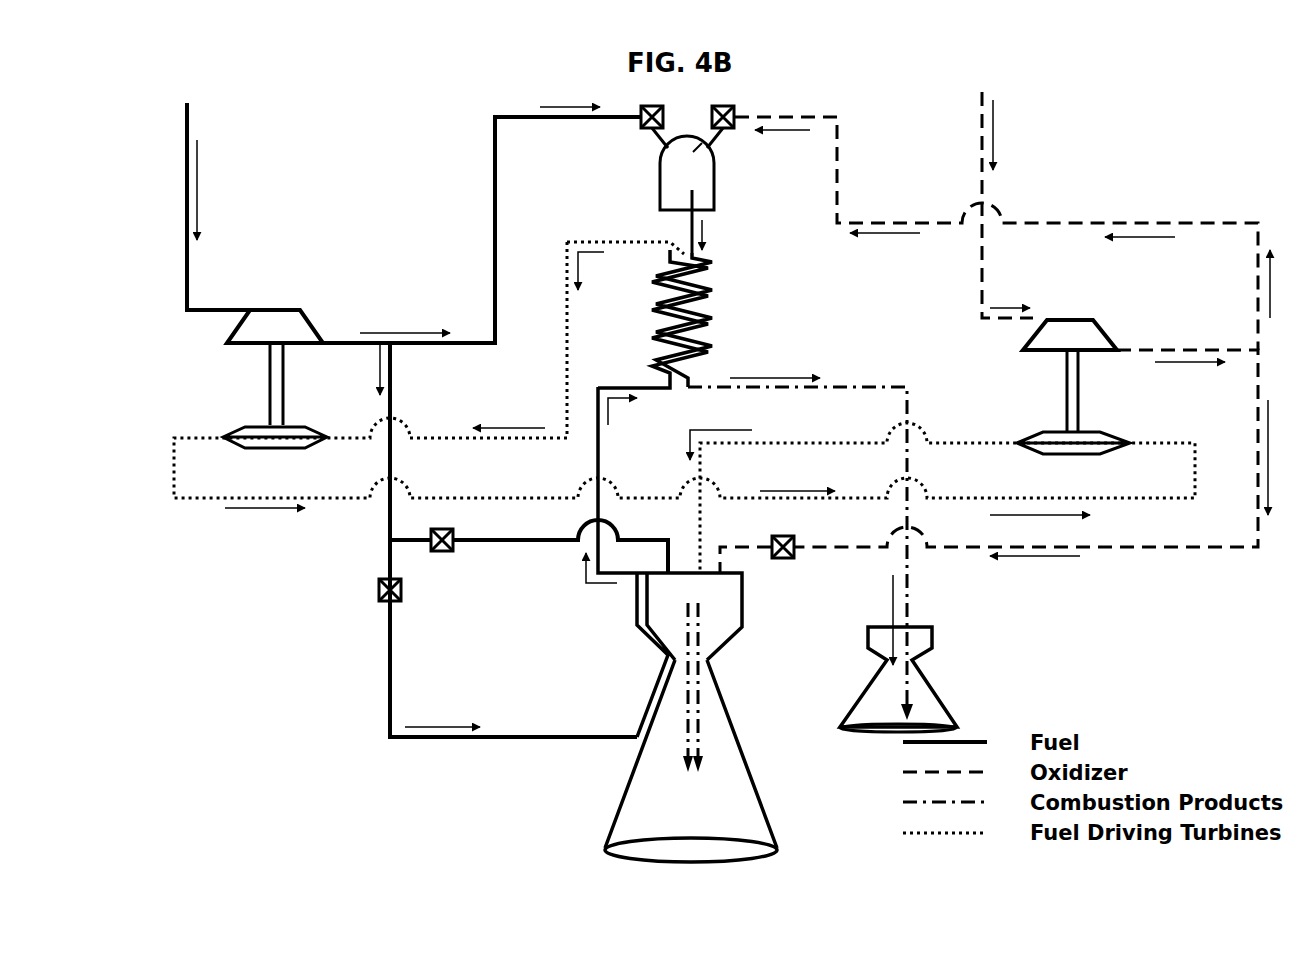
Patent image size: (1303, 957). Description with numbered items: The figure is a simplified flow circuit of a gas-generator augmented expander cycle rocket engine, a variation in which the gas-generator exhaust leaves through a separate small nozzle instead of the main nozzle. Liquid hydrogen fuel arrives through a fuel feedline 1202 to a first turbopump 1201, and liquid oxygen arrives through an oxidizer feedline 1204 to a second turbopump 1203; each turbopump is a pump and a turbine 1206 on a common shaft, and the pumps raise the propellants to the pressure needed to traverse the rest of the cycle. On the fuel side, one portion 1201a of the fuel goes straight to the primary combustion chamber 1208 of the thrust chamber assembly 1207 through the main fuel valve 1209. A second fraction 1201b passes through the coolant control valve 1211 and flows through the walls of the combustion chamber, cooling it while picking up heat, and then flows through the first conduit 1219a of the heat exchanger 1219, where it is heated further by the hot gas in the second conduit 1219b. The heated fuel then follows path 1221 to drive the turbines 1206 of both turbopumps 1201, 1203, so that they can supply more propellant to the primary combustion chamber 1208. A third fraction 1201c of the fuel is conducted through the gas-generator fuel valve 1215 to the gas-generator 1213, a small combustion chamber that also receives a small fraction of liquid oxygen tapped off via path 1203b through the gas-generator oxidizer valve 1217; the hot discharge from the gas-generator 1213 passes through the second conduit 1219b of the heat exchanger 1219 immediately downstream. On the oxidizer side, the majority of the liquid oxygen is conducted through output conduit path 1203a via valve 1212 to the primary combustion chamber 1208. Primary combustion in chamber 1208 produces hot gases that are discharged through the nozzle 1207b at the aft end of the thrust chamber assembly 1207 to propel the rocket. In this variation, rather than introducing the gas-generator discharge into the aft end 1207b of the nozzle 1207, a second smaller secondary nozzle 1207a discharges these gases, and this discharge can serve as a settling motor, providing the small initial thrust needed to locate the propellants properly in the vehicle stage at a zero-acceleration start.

The first turbopump 1201 is at (305, 315).
The fuel fraction to primary combustion chamber 1201a is at (387, 447).
The coolant fuel fraction 1201b is at (385, 648).
The gas-generator fuel fraction 1201c is at (495, 242).
The fuel feedline 1202 is at (188, 133).
The second turbopump 1203 is at (1073, 318).
The oxidizer output conduit path 1203a is at (1258, 405).
The gas-generator oxidizer path 1203b is at (1257, 270).
The oxidizer feedline 1204 is at (985, 97).
The turbine 1206 is at (257, 448).
The thrust chamber assembly 1207 is at (618, 761).
The secondary nozzle 1207a is at (927, 680).
The nozzle 1207b is at (688, 810).
The primary combustion chamber 1208 is at (700, 595).
The main fuel valve 1209 is at (432, 552).
The coolant control valve 1211 is at (400, 595).
The oxidizer valve 1212 is at (790, 560).
The gas-generator 1213 is at (672, 198).
The gas-generator fuel valve 1215 is at (642, 130).
The gas-generator oxidizer valve 1217 is at (722, 132).
The heat exchanger 1219 is at (695, 319).
The first conduit 1219a is at (668, 349).
The second conduit 1219b is at (707, 347).
The heated fuel path 1221 is at (565, 386).